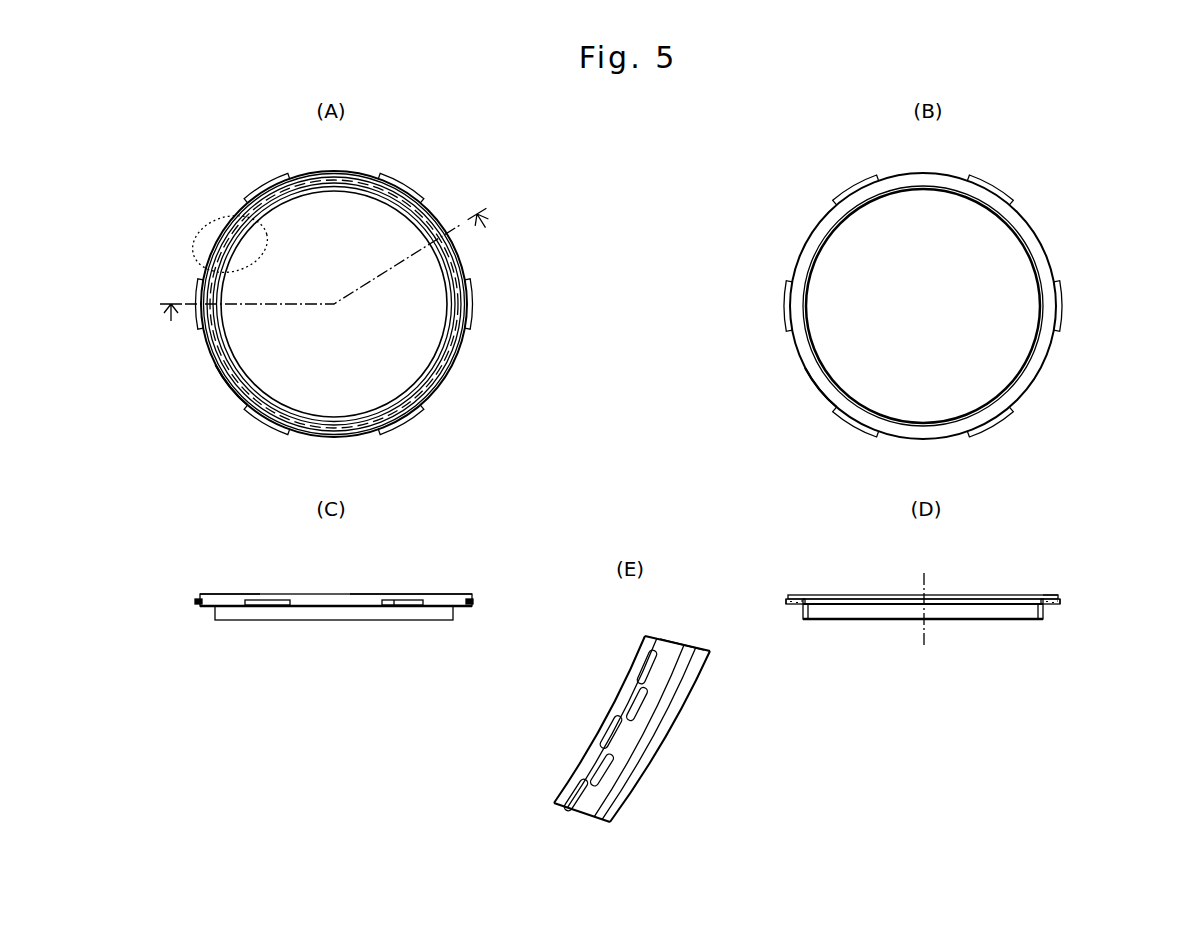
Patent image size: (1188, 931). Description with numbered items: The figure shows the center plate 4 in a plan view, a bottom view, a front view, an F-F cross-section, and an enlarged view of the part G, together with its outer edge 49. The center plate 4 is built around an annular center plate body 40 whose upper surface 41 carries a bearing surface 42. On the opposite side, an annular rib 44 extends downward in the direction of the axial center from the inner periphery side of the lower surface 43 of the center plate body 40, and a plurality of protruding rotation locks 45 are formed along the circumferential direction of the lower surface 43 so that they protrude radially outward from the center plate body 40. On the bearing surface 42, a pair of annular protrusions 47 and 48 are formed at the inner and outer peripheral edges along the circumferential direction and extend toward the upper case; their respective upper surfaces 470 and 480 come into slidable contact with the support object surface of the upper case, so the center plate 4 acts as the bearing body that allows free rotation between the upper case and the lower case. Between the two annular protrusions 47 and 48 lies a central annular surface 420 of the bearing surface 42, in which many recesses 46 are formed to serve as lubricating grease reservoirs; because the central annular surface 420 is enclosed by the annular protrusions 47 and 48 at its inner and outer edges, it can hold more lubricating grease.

The center plate 4 is at (474, 141).
The center plate body 40 is at (433, 217).
The upper surface 41 is at (461, 350).
The bearing surface 42 is at (445, 383).
The lower surface 43 is at (206, 606).
The annular rib 44 is at (250, 620).
The rotation lock 45 is at (473, 303).
The recess 46 is at (652, 668).
The annular protrusion 47 is at (808, 600).
The annular protrusion 48 is at (790, 598).
The outer peripheral surface 49 is at (219, 372).
The central annular surface 420 is at (1050, 586).
The upper surface 470 is at (622, 753).
The upper surface 480 is at (616, 729).